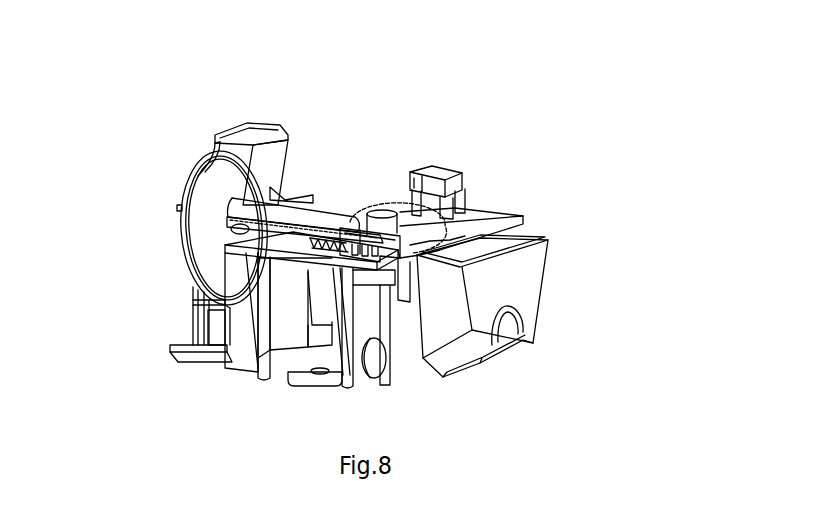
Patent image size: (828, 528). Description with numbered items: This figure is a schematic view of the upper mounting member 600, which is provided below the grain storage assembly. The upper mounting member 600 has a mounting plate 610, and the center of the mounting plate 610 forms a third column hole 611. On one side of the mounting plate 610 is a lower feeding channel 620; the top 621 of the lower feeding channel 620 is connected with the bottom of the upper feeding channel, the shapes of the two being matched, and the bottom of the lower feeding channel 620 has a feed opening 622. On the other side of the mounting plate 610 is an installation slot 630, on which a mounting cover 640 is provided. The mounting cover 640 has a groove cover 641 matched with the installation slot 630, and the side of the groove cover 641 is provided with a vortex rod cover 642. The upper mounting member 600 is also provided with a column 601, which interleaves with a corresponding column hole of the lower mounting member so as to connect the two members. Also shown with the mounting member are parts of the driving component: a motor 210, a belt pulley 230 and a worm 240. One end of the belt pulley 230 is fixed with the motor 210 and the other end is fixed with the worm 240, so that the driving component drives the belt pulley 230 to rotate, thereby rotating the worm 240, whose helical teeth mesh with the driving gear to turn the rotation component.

The upper mounting member 600 is at (525, 236).
The column 601 is at (267, 347).
The mounting plate 610 is at (480, 222).
The third column hole 611 is at (383, 213).
The lower feeding channel 620 is at (515, 281).
The top of the lower feeding channel 621 is at (543, 237).
The feed opening 622 is at (498, 338).
The installation slot 630 is at (217, 303).
The mounting cover 640 is at (322, 45).
The groove cover 641 is at (252, 133).
The vortex rod cover 642 is at (296, 213).
The belt pulley 230 is at (213, 228).
The worm 240 is at (330, 237).
The motor 210 is at (370, 372).